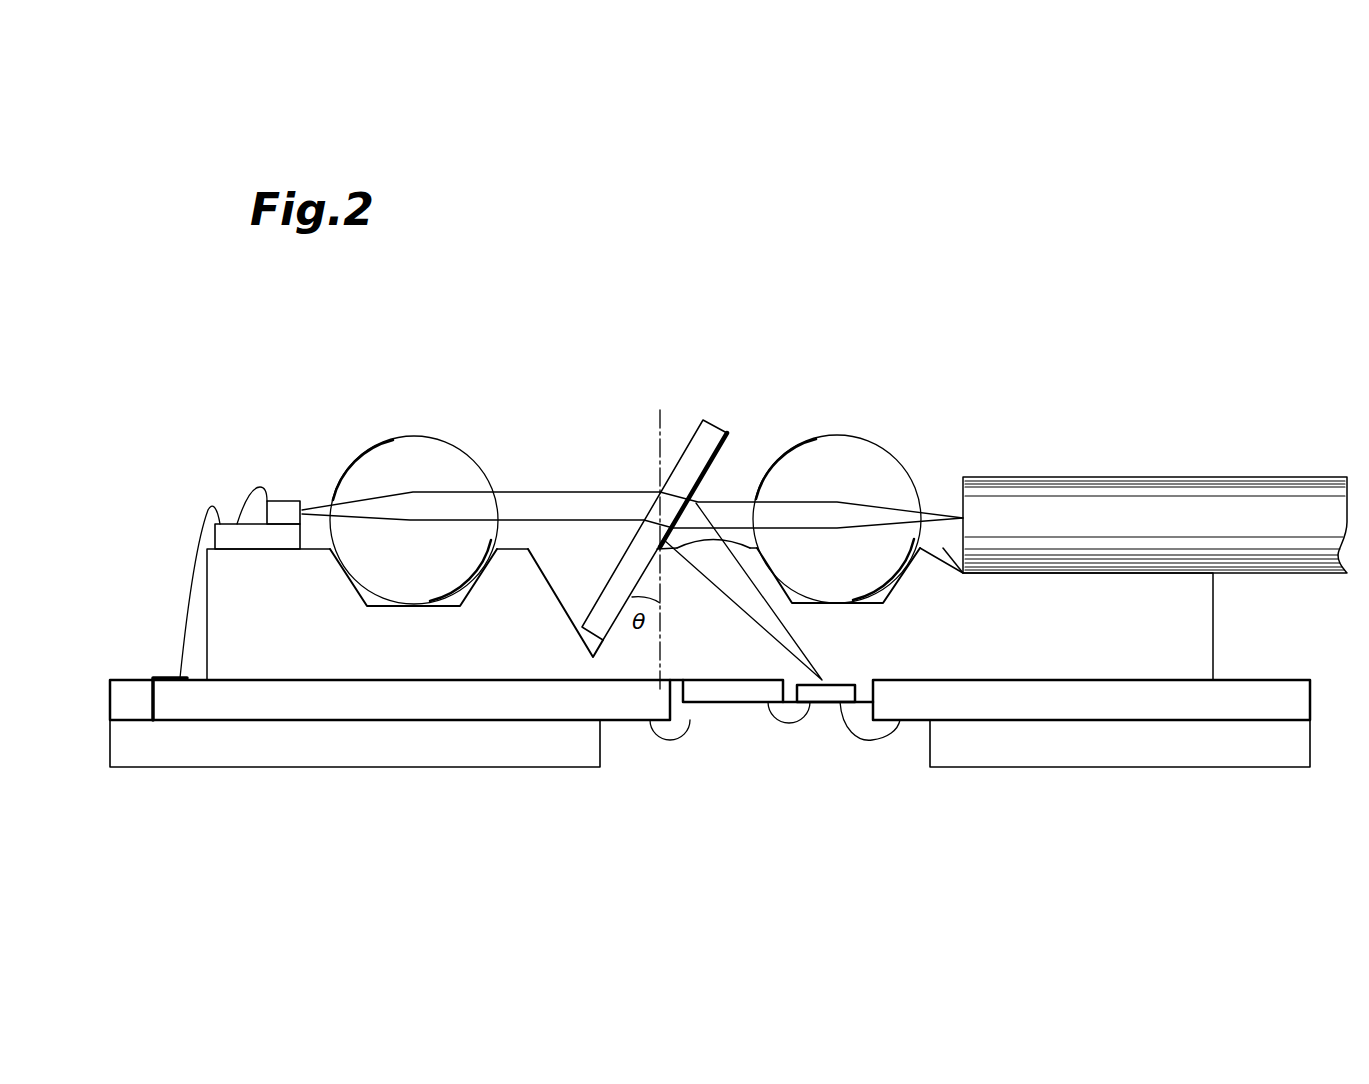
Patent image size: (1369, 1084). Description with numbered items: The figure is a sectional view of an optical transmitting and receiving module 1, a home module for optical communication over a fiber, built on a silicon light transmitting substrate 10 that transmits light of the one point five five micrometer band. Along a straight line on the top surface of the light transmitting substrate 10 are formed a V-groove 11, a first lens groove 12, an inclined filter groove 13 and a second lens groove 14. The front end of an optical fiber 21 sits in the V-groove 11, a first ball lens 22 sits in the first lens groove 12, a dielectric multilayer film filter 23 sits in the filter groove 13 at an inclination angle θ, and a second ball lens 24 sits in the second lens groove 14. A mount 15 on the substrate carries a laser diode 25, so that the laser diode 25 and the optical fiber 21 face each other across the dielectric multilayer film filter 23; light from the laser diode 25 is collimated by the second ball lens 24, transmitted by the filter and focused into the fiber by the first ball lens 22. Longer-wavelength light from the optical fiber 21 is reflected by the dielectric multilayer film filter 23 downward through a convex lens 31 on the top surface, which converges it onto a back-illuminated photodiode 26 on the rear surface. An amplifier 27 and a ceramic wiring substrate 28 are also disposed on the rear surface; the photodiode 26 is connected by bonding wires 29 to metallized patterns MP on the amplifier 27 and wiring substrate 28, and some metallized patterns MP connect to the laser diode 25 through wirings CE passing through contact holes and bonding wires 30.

The optical transmitting and receiving module 1 is at (953, 428).
The light transmitting substrate 10 is at (490, 665).
The V-groove 11 is at (961, 555).
The first lens groove 12 is at (885, 601).
The filter groove 13 is at (563, 575).
The second lens groove 14 is at (458, 603).
The mount 15 is at (253, 538).
The optical fiber 21 is at (1106, 514).
The first ball lens 22 is at (858, 465).
The dielectric multilayer film filter 23 is at (703, 440).
The second ball lens 24 is at (425, 467).
The laser diode 25 is at (287, 511).
The photodiode 26 is at (838, 692).
The amplifier 27 is at (722, 690).
The wiring substrate 28 is at (355, 747).
The bonding wires 29 is at (870, 740).
The bonding wires 30 is at (198, 520).
The convex lens 31 is at (707, 536).
The wirings CE is at (150, 703).
The metallized patterns MP is at (615, 724).